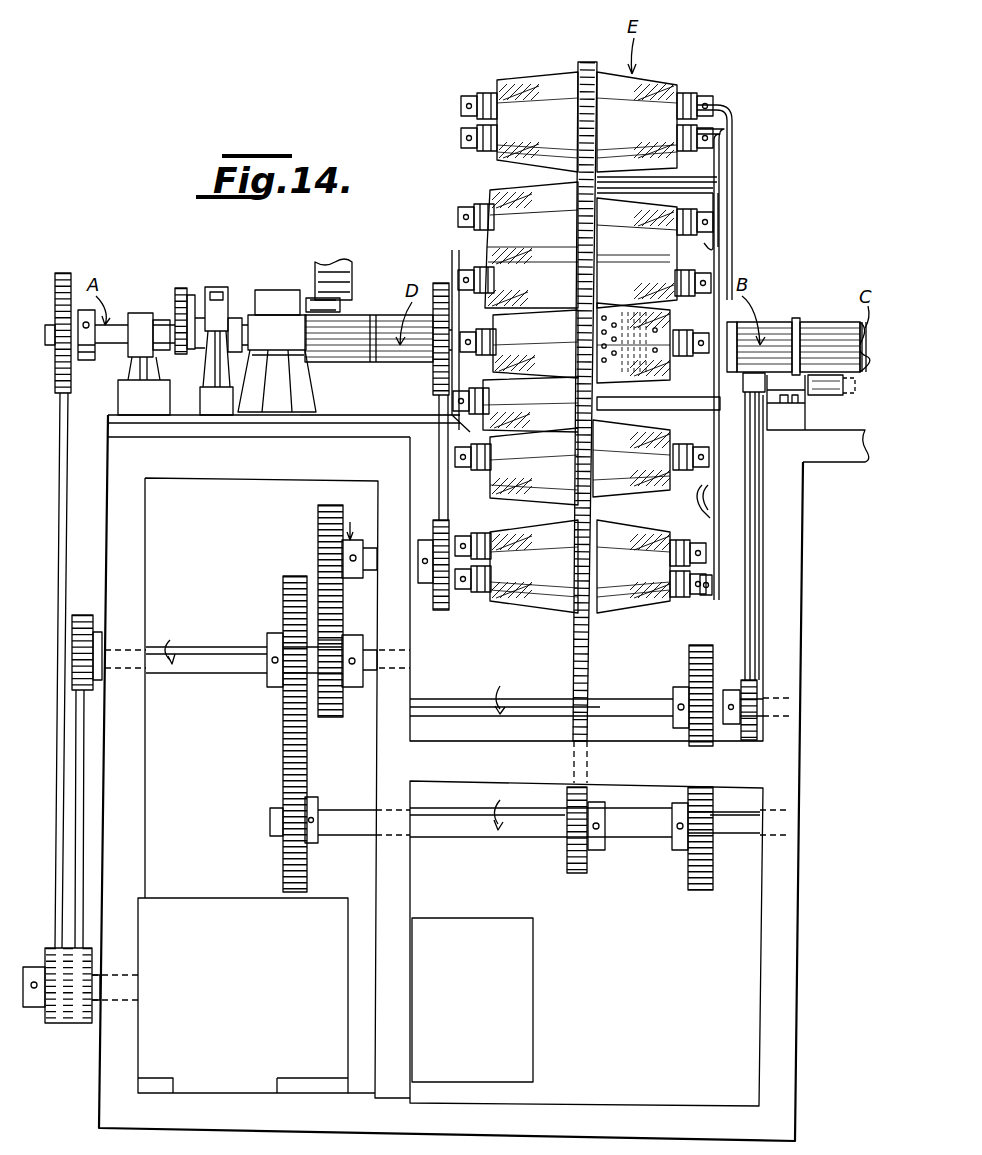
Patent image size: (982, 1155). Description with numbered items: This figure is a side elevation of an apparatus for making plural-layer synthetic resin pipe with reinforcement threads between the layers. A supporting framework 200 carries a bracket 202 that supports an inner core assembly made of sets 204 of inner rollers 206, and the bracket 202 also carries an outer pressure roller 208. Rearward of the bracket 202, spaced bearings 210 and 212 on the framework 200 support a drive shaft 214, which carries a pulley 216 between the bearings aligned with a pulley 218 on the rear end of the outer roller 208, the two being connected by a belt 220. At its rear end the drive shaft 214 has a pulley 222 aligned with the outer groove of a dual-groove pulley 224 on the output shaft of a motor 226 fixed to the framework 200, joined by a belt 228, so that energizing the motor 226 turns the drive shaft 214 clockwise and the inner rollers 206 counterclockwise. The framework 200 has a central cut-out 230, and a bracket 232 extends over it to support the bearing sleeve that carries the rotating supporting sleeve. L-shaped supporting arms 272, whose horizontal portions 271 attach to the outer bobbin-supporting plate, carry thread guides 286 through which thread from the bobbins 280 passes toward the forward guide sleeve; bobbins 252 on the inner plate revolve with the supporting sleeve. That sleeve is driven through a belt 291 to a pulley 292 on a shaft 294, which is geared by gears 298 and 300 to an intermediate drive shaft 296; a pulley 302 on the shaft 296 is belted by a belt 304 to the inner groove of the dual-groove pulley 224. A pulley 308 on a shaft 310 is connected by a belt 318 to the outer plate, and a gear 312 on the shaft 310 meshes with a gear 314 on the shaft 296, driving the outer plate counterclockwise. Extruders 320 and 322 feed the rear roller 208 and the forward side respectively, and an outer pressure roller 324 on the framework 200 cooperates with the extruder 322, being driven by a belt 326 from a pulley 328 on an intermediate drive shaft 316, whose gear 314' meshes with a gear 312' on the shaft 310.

The supporting framework 200 is at (146, 752).
The bracket 202 is at (300, 395).
The sets of inner rollers 204 is at (368, 312).
The inner rollers 206 is at (772, 322).
The outer pressure roller 208 is at (312, 296).
The bearing 210 is at (140, 318).
The bearing 212 is at (210, 350).
The drive shaft 214 is at (95, 358).
The pulley 216 is at (162, 350).
The pulley 218 is at (194, 298).
The belt 220 is at (180, 290).
The pulley 222 is at (55, 282).
The dual-groove pulley 224 is at (65, 1025).
The motor 226 is at (195, 905).
The belt 228 is at (57, 775).
The central cut-out 230 is at (622, 740).
The bracket 232 is at (333, 436).
The bobbins 252 is at (500, 426).
The horizontal portions 271 is at (700, 182).
The L-shaped supporting arms 272 is at (741, 126).
The bobbins 280 is at (525, 78).
The thread guides 286 is at (718, 213).
The belt 291 is at (445, 455).
The pulley 292 is at (450, 602).
The shaft 294 is at (372, 550).
The intermediate drive shaft 296 is at (215, 645).
The gear 298 is at (318, 527).
The gear 300 is at (324, 712).
The pulley 302 is at (95, 617).
The belt 304 is at (95, 722).
The pulley 308 is at (598, 856).
The shaft 310 is at (455, 825).
The gear 312 is at (275, 734).
The gear 312' is at (670, 845).
The gear 314 is at (288, 669).
The gear 314' is at (687, 693).
The intermediate drive shaft 316 is at (445, 704).
The belt 318 is at (580, 700).
The extruder 320 is at (345, 266).
The extruder 322 is at (843, 392).
The outer pressure roller 324 is at (808, 418).
The belt 326 is at (752, 537).
The pulley 328 is at (762, 690).